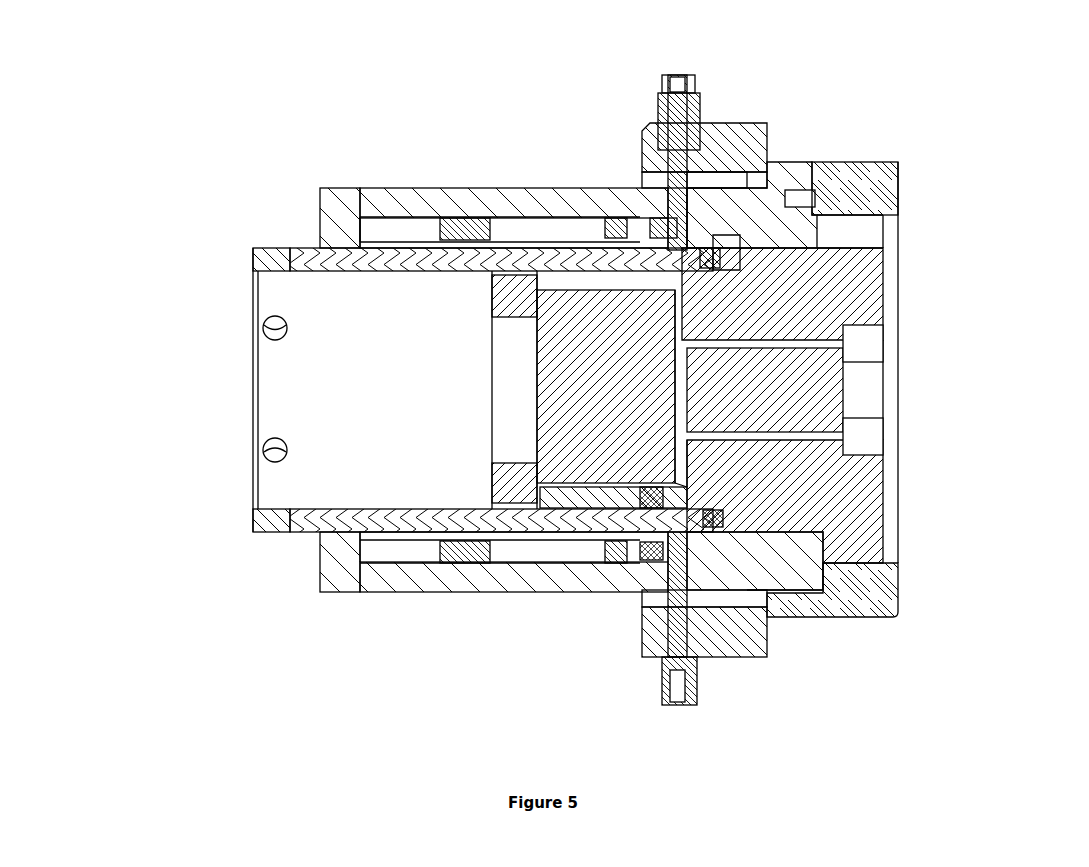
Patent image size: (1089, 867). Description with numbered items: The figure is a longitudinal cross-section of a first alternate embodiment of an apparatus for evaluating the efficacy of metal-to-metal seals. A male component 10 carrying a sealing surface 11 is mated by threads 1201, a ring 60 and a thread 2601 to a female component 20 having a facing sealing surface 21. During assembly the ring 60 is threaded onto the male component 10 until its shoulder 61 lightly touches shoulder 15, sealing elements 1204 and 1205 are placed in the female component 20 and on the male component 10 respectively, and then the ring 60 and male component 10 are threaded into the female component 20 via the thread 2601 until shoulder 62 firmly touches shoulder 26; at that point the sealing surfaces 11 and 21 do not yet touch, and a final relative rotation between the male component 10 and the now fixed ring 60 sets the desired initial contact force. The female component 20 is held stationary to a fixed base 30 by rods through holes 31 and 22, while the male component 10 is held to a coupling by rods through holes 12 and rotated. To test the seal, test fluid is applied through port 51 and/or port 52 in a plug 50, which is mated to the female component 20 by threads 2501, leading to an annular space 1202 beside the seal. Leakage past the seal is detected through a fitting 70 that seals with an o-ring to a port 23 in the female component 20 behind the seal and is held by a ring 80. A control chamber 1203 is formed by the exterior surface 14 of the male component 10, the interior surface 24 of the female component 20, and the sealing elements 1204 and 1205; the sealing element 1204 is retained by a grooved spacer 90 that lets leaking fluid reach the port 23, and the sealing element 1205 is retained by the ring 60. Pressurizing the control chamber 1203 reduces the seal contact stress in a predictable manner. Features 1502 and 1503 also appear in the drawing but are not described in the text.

The male component 10 is at (393, 257).
The sealing surface 11 is at (515, 302).
The holes 12 is at (278, 520).
The exterior surface 14 is at (623, 510).
The shoulder 15 is at (490, 267).
The female component 20 is at (720, 217).
The facing sealing surface 21 is at (688, 215).
The holes 22 is at (798, 197).
The port 23 is at (680, 210).
The interior surface 24 is at (665, 598).
The shoulder 26 is at (368, 200).
The fixed base 30 is at (883, 173).
The holes 31 is at (808, 163).
The plug 50 is at (873, 388).
The port 51 is at (867, 343).
The port 52 is at (867, 433).
The ring 60 is at (340, 228).
The shoulder 61 is at (433, 215).
The shoulder 62 is at (360, 218).
The fitting 70 is at (665, 103).
The ring 80 is at (653, 125).
The spacer 90 is at (712, 565).
The threads 1201 is at (360, 270).
The annular space 1202 is at (753, 593).
The control chamber 1203 is at (655, 560).
The sealing element 1204 is at (647, 575).
The sealing element 1205 is at (650, 520).
The lower passage 1502 is at (680, 485).
The lower groove 1503 is at (710, 518).
The threads 2501 is at (820, 277).
The thread 2601 is at (410, 213).